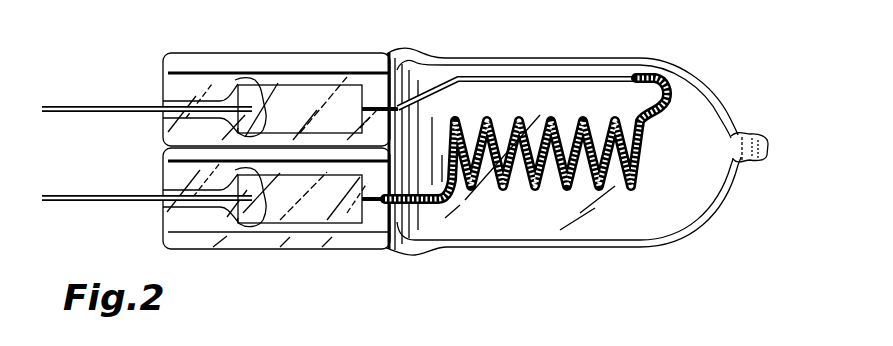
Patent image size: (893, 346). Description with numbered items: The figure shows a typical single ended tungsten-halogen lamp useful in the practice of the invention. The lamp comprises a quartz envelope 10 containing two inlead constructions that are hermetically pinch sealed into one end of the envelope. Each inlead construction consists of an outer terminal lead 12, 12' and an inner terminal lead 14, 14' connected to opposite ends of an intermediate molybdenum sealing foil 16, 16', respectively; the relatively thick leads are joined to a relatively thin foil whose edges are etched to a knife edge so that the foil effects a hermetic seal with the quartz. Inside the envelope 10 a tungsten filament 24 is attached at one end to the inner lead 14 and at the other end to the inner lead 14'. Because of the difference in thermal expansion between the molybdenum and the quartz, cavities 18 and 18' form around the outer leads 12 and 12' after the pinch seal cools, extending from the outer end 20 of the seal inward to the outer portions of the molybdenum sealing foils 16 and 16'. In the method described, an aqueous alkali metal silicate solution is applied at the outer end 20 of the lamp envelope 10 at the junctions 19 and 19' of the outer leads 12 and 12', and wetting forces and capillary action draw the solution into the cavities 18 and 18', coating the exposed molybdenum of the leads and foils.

The quartz envelope 10 is at (682, 67).
The outer lead 12 is at (147, 87).
The outer lead 12' is at (147, 173).
The inner lead 14 is at (516, 56).
The inner lead 14' is at (373, 240).
The molybdenum sealing foil 16 is at (318, 72).
The molybdenum sealing foil 16' is at (312, 227).
The cavity 18 is at (224, 74).
The cavity 18' is at (235, 225).
The junction 19 is at (172, 111).
The junction 19' is at (167, 203).
The outer end 20 is at (163, 79).
The tungsten filament 24 is at (502, 190).